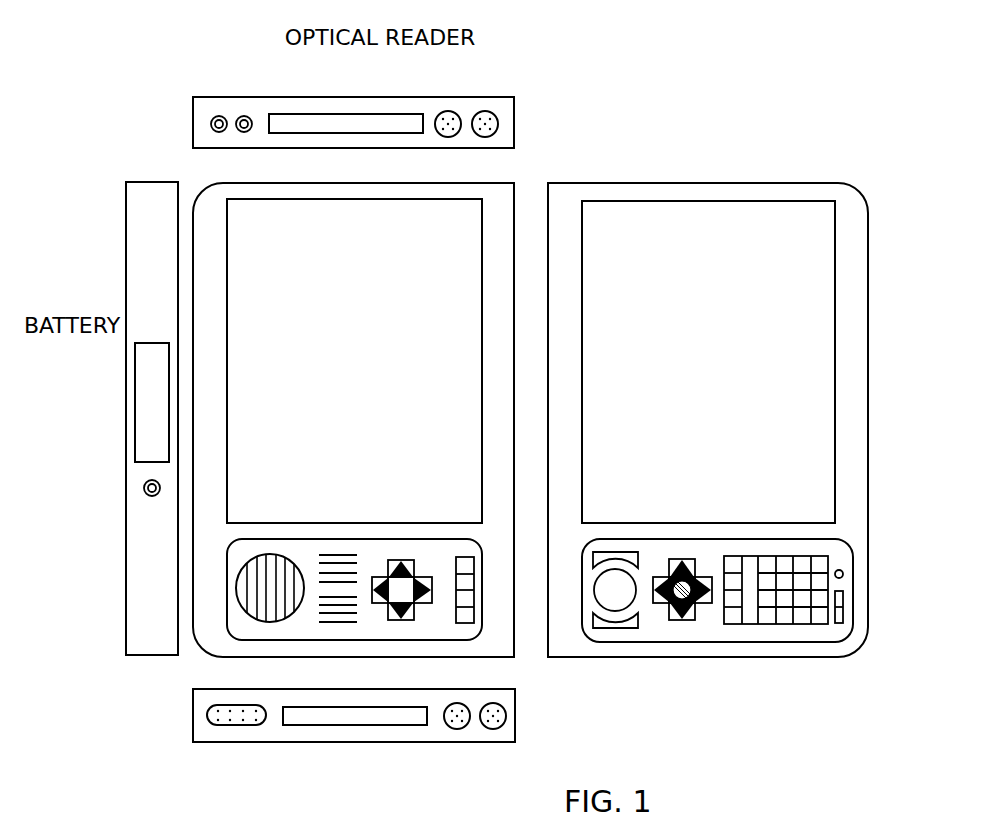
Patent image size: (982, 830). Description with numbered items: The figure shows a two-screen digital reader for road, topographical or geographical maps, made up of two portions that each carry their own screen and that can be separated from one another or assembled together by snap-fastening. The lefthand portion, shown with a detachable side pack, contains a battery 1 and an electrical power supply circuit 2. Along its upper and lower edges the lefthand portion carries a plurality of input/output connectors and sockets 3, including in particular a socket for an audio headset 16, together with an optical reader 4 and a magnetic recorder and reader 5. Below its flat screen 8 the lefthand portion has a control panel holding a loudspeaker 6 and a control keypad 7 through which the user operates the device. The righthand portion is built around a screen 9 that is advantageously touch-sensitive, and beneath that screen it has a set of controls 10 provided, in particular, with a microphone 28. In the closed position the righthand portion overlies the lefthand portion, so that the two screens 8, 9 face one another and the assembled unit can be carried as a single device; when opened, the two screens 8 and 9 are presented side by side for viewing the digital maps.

The battery 1 is at (144, 437).
The electrical power supply circuit 2 is at (143, 487).
The external connectors and sockets 3 is at (464, 120).
The optical reader 4 is at (399, 113).
The magnetic recorder and reader 5 is at (375, 725).
The loudspeaker 6 is at (257, 612).
The control keypad 7 is at (465, 625).
The flat screen 8 is at (338, 208).
The screen 9 is at (692, 225).
The set of controls 10 is at (704, 623).
The audio headset connector 16 is at (232, 117).
The microphone 28 is at (845, 573).